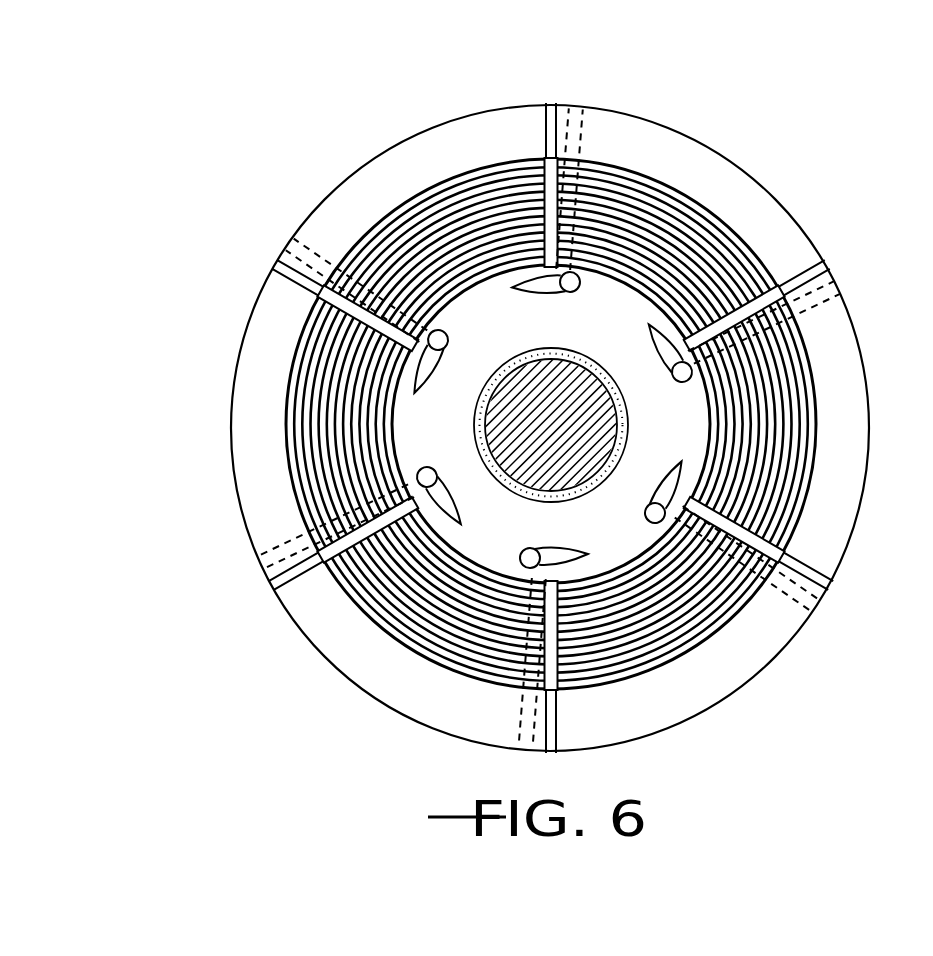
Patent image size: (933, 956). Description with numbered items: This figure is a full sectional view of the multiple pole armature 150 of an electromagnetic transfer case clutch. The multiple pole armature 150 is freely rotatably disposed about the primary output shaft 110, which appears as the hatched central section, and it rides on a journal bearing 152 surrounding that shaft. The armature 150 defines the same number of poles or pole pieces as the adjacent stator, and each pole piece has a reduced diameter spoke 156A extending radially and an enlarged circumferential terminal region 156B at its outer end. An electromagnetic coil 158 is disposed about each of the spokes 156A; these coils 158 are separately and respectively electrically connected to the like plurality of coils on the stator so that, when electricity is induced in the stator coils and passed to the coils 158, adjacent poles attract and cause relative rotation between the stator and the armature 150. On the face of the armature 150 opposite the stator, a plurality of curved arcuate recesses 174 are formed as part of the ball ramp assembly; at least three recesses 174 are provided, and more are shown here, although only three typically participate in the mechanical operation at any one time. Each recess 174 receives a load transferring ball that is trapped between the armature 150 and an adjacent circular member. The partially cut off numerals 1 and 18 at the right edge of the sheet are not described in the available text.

The multiple pole armature 150 is at (775, 118).
The journal bearing 152 is at (474, 438).
The primary output shaft 110 is at (570, 452).
The electromagnetic coil 158 is at (753, 261).
The curved arcuate recess 174 is at (667, 350).
The reduced diameter spoke 156A is at (375, 220).
The enlarged circumferential terminal region 156B is at (449, 712).
The hook feature (numeral cut off) 1 is at (668, 518).
The numeral cut off 18 is at (925, 601).